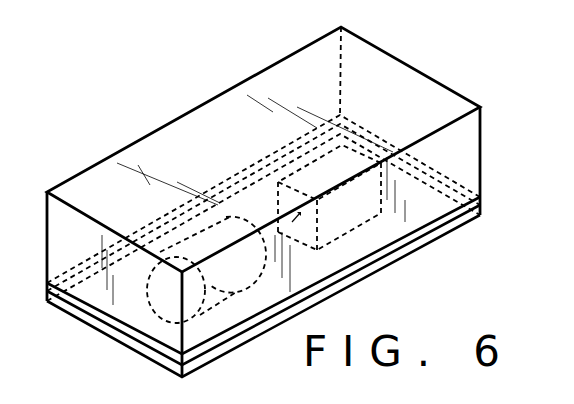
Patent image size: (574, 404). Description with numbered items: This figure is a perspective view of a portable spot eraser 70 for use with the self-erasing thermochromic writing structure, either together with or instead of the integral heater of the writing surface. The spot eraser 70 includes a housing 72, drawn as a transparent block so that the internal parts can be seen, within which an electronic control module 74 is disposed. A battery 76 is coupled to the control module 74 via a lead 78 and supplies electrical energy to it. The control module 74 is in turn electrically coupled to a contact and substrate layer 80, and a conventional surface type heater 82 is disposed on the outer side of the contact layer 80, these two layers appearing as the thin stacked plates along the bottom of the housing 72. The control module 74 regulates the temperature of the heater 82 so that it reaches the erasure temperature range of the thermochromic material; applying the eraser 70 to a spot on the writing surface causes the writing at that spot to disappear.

The portable spot eraser 70 is at (191, 66).
The housing 72 is at (83, 193).
The electronic control module 74 is at (349, 209).
The battery 76 is at (223, 288).
The lead 78 is at (275, 232).
The contact and substrate layer 80 is at (78, 301).
The surface type heater 82 is at (125, 342).